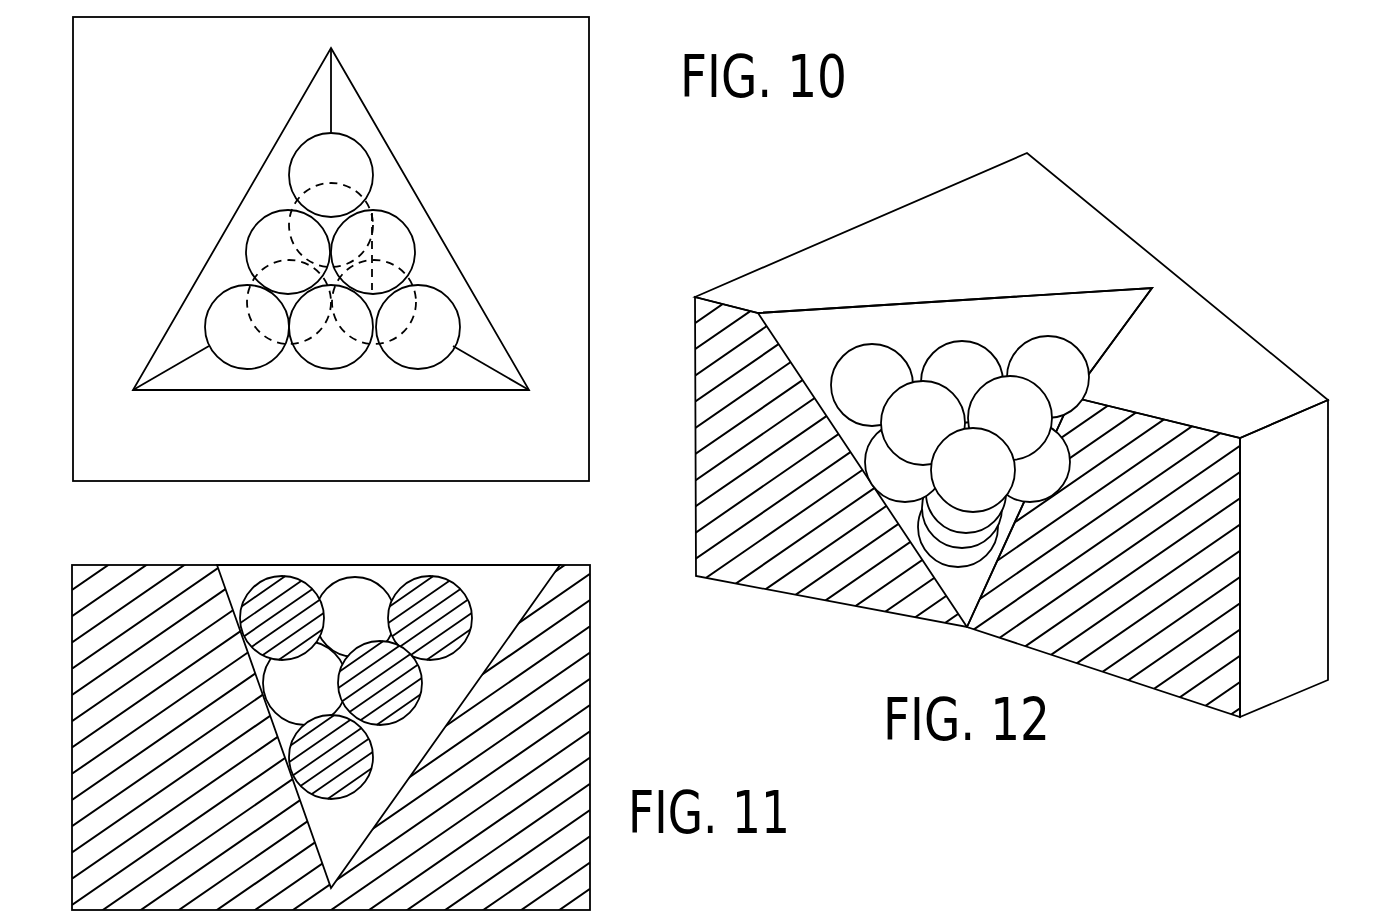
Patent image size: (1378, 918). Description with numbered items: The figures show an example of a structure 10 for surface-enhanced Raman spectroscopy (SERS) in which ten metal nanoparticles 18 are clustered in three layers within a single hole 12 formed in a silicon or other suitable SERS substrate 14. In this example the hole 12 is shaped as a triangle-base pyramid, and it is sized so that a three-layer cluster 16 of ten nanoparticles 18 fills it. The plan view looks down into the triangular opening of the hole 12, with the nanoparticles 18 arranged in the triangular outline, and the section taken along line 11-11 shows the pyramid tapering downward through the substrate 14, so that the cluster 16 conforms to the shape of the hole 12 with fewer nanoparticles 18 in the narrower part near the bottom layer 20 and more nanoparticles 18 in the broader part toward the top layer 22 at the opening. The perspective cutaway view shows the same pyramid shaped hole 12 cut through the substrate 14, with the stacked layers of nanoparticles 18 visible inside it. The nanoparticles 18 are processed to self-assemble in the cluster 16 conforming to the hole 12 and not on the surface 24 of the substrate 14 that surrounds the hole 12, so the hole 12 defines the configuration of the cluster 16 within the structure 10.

In FIG. 10, the structure 10 is at (611, 194).
In FIG. 11, the structure 10 is at (615, 696).
In FIG. 12, the structure 10 is at (1236, 267).
In FIG. 10, the section line 11- 11 is at (619, 74).
In FIG. 10, the hole 12 is at (394, 183).
In FIG. 11, the hole 12 is at (503, 577).
In FIG. 12, the hole 12 is at (1018, 308).
In FIG. 10, the substrate 14 is at (573, 242).
In FIG. 11, the substrate 14 is at (573, 745).
In FIG. 12, the substrate 14 is at (1322, 510).
In FIG. 10, the cluster 16 is at (421, 208).
In FIG. 11, the cluster 16 is at (347, 561).
In FIG. 12, the cluster 16 is at (929, 325).
In FIG. 10, the metal nanoparticles 18 is at (290, 177).
In FIG. 11, the metal nanoparticles 18 is at (452, 647).
In FIG. 12, the metal nanoparticles 18 is at (935, 538).
In FIG. 10, the bottom layer 20 is at (330, 238).
In FIG. 11, the bottom layer 20 is at (333, 800).
In FIG. 12, the bottom layer 20 is at (948, 555).
In FIG. 10, the top layer 22 is at (393, 355).
In FIG. 11, the top layer 22 is at (368, 585).
In FIG. 12, the top layer 22 is at (858, 356).
In FIG. 10, the surface 24 is at (485, 443).
In FIG. 11, the surface 24 is at (162, 565).
In FIG. 12, the surface 24 is at (1183, 380).